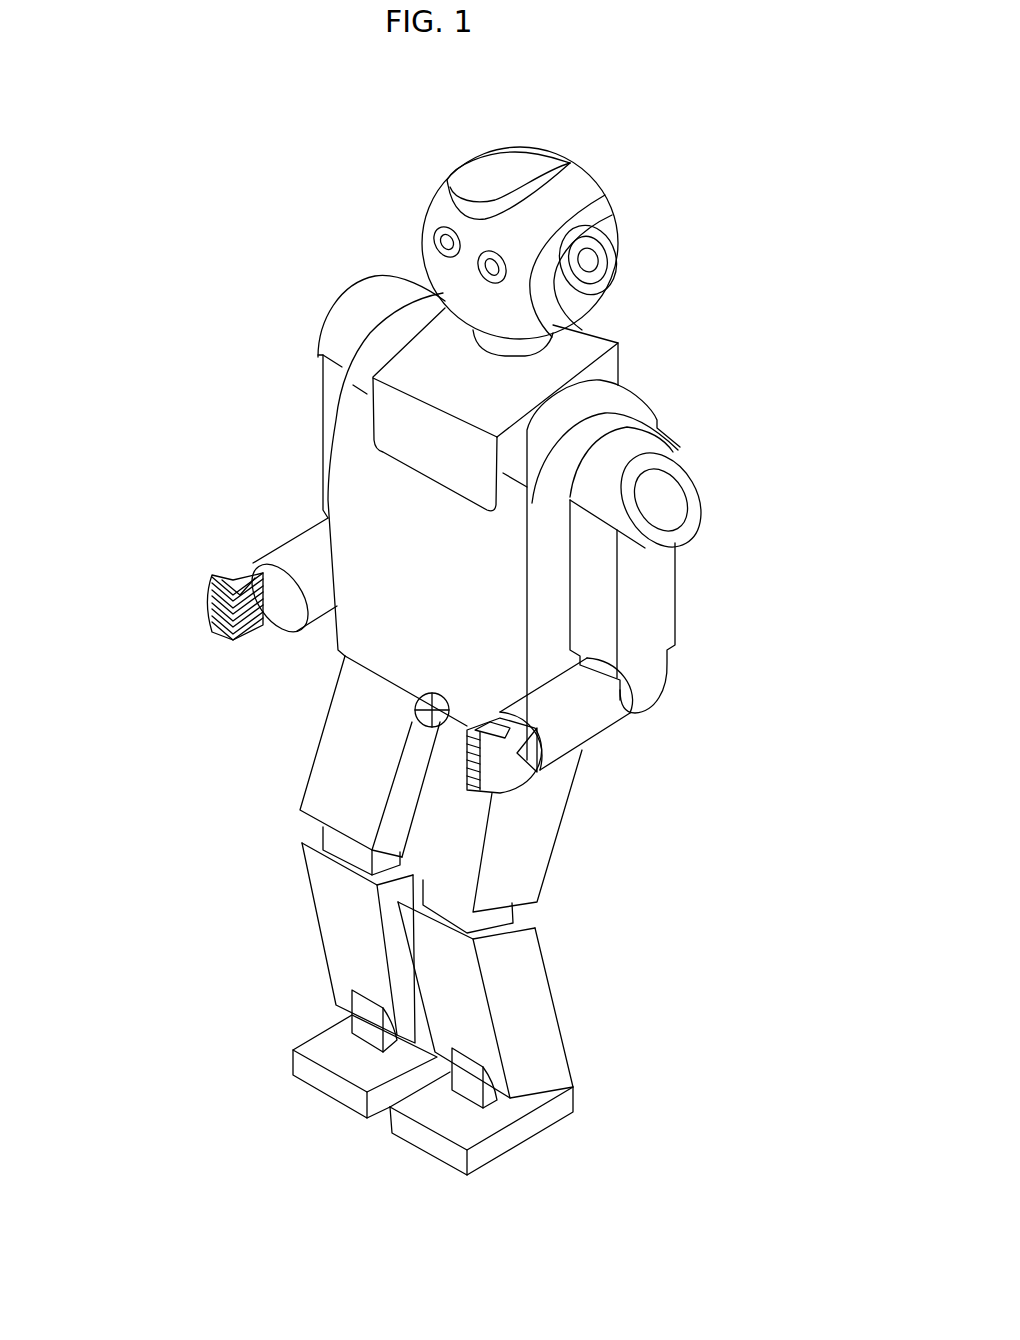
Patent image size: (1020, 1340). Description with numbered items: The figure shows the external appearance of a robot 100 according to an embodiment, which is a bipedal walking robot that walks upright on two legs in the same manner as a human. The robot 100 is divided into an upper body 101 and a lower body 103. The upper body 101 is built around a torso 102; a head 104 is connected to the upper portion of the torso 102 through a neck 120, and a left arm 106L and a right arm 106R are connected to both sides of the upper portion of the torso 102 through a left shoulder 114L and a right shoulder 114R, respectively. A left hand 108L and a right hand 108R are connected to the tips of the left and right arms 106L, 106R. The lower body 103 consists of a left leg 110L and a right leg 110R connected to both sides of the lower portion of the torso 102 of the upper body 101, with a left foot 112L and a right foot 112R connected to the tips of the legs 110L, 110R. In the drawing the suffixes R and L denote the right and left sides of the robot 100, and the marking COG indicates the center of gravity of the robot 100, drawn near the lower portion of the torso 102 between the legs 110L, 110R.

The robot 100 is at (421, 108).
The upper body 101 is at (229, 377).
The torso 102 is at (367, 490).
The lower body 103 is at (273, 828).
The head 104 is at (428, 213).
The right arm 106R is at (276, 556).
The left arm 106L is at (653, 668).
The right hand 108R is at (207, 607).
The left hand 108L is at (535, 785).
The right leg 110R is at (327, 927).
The left leg 110L is at (540, 1002).
The right foot 112R is at (300, 1068).
The left foot 112L is at (513, 1133).
The right shoulder 114R is at (343, 307).
The left shoulder 114L is at (660, 440).
The neck 120 is at (548, 344).
The center of gravity COG is at (415, 708).